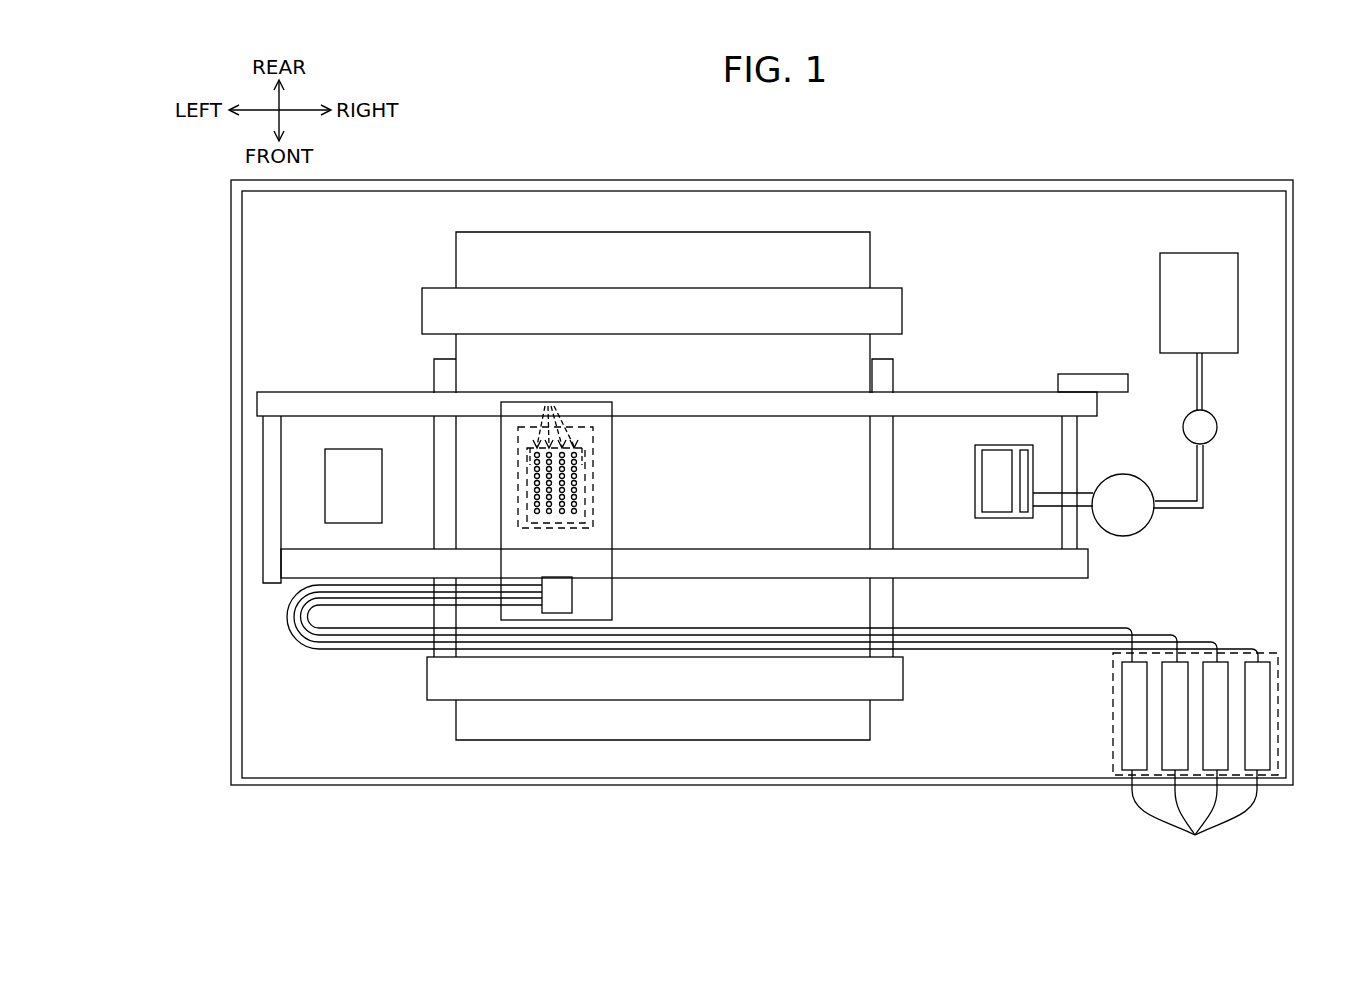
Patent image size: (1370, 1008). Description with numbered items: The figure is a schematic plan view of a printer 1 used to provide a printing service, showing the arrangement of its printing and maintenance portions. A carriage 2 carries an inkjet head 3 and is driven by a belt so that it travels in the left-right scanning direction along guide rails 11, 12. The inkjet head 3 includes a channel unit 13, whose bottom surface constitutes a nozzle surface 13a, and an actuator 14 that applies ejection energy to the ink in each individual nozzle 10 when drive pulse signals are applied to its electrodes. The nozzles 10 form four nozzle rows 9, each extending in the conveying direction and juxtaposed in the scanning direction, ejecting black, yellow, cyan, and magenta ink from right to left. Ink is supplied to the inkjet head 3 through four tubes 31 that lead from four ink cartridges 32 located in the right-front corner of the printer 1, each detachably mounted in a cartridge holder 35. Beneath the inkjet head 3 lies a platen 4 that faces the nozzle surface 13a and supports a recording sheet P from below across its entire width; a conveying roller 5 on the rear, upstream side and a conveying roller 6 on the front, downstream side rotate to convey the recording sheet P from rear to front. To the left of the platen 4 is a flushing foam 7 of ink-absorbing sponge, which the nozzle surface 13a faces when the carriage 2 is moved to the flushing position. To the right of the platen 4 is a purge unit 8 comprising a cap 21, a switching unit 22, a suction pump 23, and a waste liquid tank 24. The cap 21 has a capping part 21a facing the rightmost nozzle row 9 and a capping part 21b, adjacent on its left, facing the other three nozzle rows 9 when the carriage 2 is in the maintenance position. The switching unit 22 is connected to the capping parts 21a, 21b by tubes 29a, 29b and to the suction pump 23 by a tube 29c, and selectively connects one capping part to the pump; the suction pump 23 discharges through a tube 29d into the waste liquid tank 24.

The printer 1 is at (1296, 176).
The recording sheet P is at (463, 255).
The carriage 2 is at (612, 600).
The inkjet head 3 is at (567, 528).
The platen 4 is at (444, 367).
The conveying roller 5 is at (437, 310).
The conveying roller 6 is at (427, 682).
The flushing foam 7 is at (348, 468).
The purge unit 8 is at (1218, 515).
The nozzle row 9 is at (549, 402).
The nozzle 10 is at (518, 466).
The guide rail 11 is at (257, 405).
The guide rail 12 is at (281, 572).
The channel unit 13 is at (585, 512).
The nozzle surface 13a is at (585, 490).
The actuator 14 is at (593, 465).
The cap 21 is at (1033, 447).
The capping part 21a is at (1024, 447).
The capping part 21b is at (997, 463).
The switching unit 22 is at (1130, 535).
The suction pump 23 is at (1217, 430).
The waste liquid tank 24 is at (1228, 302).
The tube 29a is at (1088, 495).
The tube 29b is at (1088, 510).
The tube 29c is at (1187, 508).
The tube 29d is at (1203, 375).
The tubes 31 is at (993, 630).
The ink cartridges 32 is at (1194, 823).
The cartridge holder 35 is at (1113, 740).